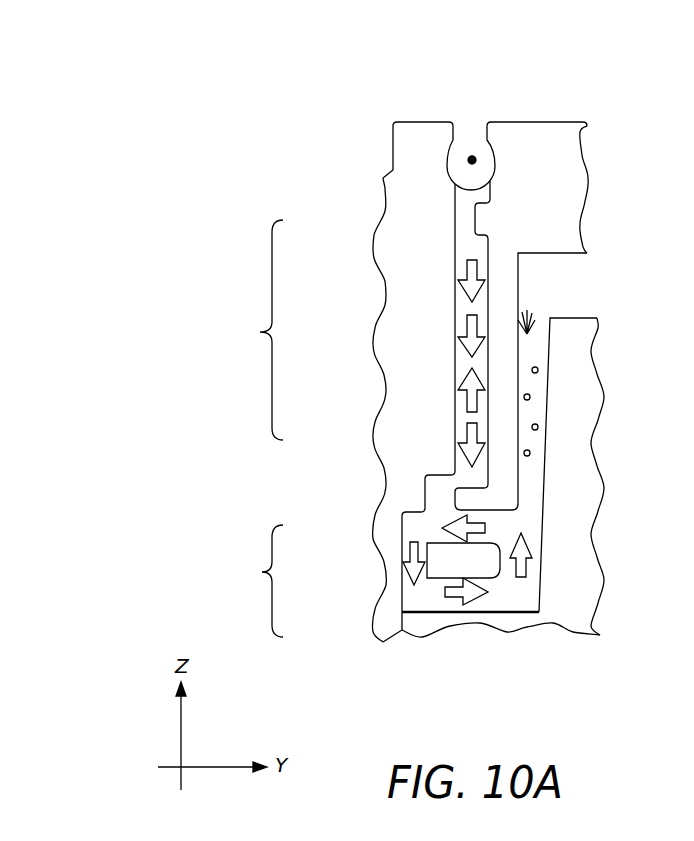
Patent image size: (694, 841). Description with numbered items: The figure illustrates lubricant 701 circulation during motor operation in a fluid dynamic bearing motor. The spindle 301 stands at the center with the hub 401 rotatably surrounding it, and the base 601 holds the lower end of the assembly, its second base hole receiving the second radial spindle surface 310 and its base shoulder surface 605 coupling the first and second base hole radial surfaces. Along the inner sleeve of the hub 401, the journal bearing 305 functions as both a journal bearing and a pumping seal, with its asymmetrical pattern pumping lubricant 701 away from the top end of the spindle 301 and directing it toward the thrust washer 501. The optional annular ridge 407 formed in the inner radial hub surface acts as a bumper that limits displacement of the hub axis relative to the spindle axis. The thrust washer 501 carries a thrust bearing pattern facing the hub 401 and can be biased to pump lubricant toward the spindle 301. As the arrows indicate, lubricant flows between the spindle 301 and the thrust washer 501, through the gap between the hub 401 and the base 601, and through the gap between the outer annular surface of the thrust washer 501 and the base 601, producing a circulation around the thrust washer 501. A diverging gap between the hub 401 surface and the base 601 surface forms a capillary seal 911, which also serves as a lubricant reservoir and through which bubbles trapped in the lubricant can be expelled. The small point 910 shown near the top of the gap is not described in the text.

The spindle 301 is at (393, 189).
The journal bearing 305 is at (351, 343).
The second radial spindle surface 310 is at (377, 576).
The hub 401 is at (513, 130).
The annular ridge 407 is at (488, 222).
The thrust washer 501 is at (487, 565).
The base 601 is at (588, 572).
The base shoulder surface 605 is at (532, 612).
The lubricant 701 is at (417, 527).
The pivot / contact point 910 is at (472, 155).
The capillary seal 911 is at (522, 343).